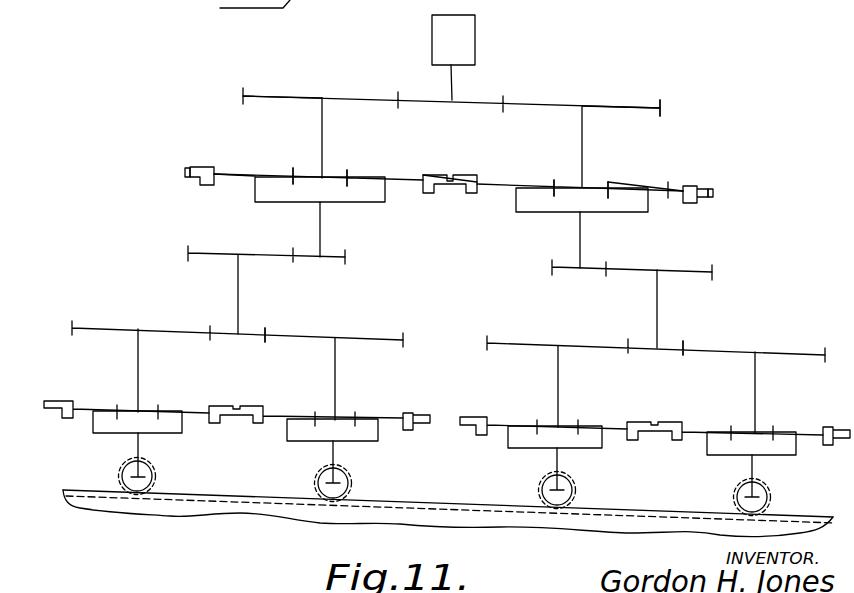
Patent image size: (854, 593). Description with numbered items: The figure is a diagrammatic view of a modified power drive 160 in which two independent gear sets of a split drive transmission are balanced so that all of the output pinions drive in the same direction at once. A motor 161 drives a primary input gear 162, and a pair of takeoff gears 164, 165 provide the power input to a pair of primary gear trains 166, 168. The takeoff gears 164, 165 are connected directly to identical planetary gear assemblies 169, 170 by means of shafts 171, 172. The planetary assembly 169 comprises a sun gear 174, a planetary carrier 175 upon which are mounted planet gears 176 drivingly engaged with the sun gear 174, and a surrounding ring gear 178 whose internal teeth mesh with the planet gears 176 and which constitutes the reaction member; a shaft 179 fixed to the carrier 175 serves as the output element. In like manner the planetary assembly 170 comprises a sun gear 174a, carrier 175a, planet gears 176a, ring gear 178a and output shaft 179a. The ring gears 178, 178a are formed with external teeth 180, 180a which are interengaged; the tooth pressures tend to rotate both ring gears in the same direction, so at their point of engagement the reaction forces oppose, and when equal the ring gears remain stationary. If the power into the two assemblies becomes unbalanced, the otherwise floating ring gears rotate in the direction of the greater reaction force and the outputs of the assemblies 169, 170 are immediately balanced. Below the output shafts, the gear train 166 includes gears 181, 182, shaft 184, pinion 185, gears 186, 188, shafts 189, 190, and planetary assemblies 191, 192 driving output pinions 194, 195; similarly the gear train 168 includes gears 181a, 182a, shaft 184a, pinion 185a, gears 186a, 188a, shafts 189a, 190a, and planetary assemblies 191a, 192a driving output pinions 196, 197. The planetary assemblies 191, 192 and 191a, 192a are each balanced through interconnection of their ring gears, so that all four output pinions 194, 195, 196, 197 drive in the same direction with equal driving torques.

The power drive 160 is at (496, 44).
The motor 161 is at (459, 0).
The primary input gear 162 is at (472, 98).
The takeoff gear 164 is at (335, 95).
The takeoff gear 165 is at (626, 78).
The primary gear train 166 is at (308, 84).
The primary gear train 168 is at (652, 100).
The planetary gear assembly 169 is at (258, 162).
The planetary gear assembly 170 is at (628, 173).
The shaft 171 is at (323, 142).
The shaft 172 is at (582, 137).
The sun gear 174 is at (306, 152).
The sun gear 174a is at (620, 163).
The planetary carrier 175 is at (290, 202).
The carrier 175a is at (573, 213).
The planet gears 176 is at (362, 179).
The planet gears 176a is at (557, 186).
The ring gear 178 is at (203, 166).
The ring gear 178a is at (697, 186).
The shaft 179 is at (321, 235).
The output shaft 179a is at (581, 246).
The external teeth 180 is at (188, 173).
The external teeth 180a is at (713, 193).
The gear 181 is at (336, 258).
The gear 181a is at (598, 270).
The gear 182 is at (231, 257).
The gear 182a is at (703, 273).
The shaft 184 is at (239, 296).
The shaft 184a is at (657, 301).
The pinion 185 is at (259, 334).
The pinion 185a is at (675, 350).
The gear 186 is at (144, 305).
The gear 186a is at (547, 323).
The gear 188 is at (352, 340).
The gear 188a is at (775, 355).
The shaft 189 is at (140, 373).
The shaft 189a is at (559, 385).
The shaft 190 is at (337, 376).
The shaft 190a is at (757, 393).
The planetary assembly 191 is at (109, 398).
The planetary assembly 191a is at (545, 412).
The planetary assembly 192 is at (362, 406).
The planetary assembly 192a is at (746, 422).
The output pinion 194 is at (156, 474).
The output pinion 195 is at (352, 481).
The output pinion 196 is at (575, 488).
The output pinion 197 is at (770, 497).